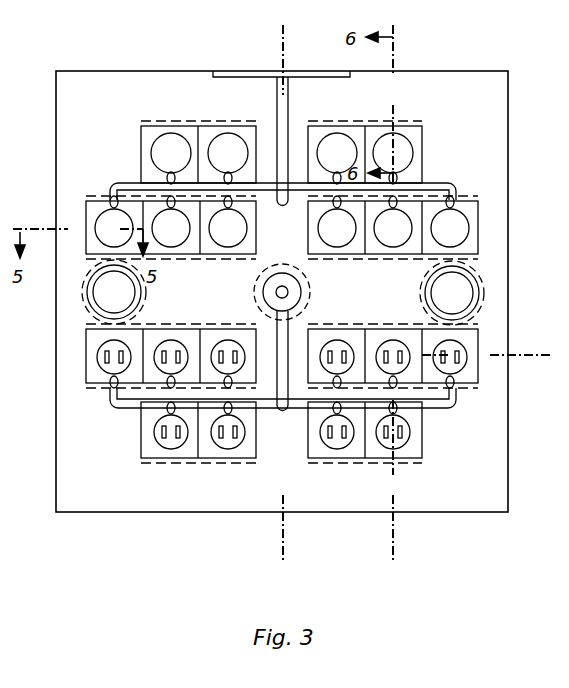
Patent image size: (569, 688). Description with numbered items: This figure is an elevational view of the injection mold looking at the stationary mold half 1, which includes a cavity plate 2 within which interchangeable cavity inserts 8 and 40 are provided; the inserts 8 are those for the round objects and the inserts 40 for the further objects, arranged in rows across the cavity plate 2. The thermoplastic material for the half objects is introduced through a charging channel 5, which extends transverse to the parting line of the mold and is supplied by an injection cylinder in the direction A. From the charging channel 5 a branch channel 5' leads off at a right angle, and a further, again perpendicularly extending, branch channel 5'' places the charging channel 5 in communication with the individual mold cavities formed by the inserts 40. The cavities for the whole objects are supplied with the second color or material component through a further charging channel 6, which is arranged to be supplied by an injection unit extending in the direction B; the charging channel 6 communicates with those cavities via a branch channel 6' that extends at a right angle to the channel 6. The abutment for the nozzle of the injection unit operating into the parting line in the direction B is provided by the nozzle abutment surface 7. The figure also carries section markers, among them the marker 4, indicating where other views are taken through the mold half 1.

The cavity plate 2 is at (94, 108).
The cavity insert 8 is at (160, 156).
The cavity insert 40 is at (157, 432).
The charging channel 6 is at (297, 141).
The branch channel 6' is at (283, 217).
The charging channel 5 is at (301, 292).
The branch channel 5' is at (315, 357).
The branch channel 5'' is at (283, 426).
The mold half 1 is at (283, 37).
The section line 4 is at (543, 358).
The nozzle abutment surface 7 is at (393, 413).